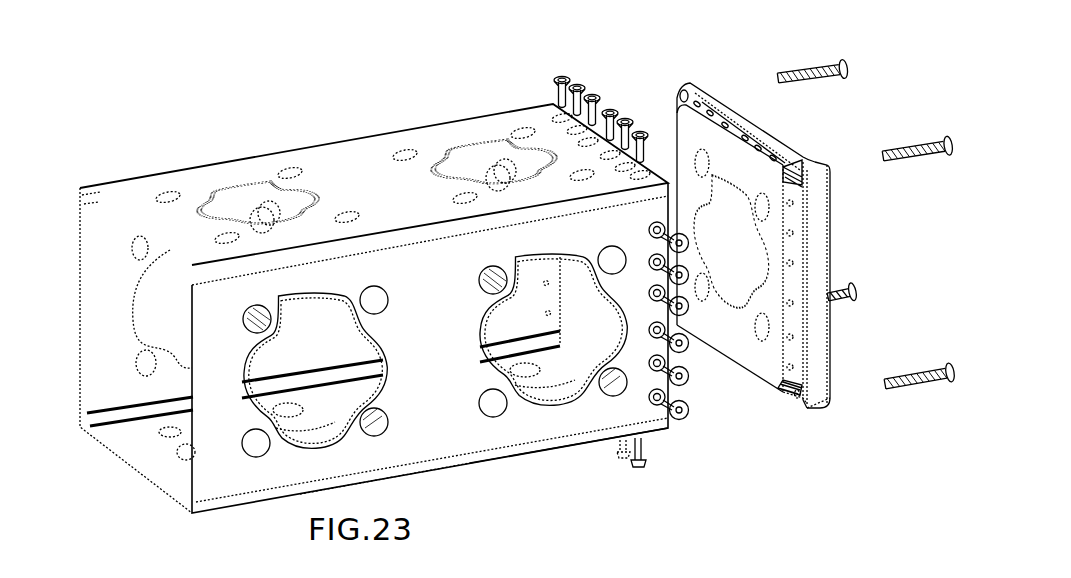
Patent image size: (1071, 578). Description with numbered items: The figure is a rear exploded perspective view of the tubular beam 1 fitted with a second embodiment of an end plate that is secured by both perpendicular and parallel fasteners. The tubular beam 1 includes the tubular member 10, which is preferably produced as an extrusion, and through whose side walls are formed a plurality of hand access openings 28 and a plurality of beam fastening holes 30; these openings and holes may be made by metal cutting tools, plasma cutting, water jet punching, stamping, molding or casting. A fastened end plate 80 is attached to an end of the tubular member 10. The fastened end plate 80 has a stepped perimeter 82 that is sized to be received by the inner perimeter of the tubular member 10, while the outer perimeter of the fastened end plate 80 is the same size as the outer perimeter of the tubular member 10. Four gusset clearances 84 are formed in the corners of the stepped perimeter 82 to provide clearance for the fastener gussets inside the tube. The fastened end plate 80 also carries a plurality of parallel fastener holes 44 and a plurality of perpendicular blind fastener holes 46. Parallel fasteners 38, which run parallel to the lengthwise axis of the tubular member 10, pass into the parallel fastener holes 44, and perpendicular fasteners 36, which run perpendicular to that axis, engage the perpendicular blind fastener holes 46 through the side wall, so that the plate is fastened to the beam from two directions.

The tubular beam 1 is at (420, 97).
The tubular member 10 is at (322, 142).
The hand access openings 28 is at (563, 449).
The beam fastening holes 30 is at (471, 465).
The perpendicular fasteners 36 is at (626, 470).
The parallel fasteners 38 is at (903, 160).
The parallel fastener holes 44 is at (688, 88).
The perpendicular blind fastener holes 46 is at (767, 389).
The fastened end plate 80 is at (826, 403).
The stepped perimeter 82 is at (762, 110).
The gusset clearances 84 is at (822, 152).